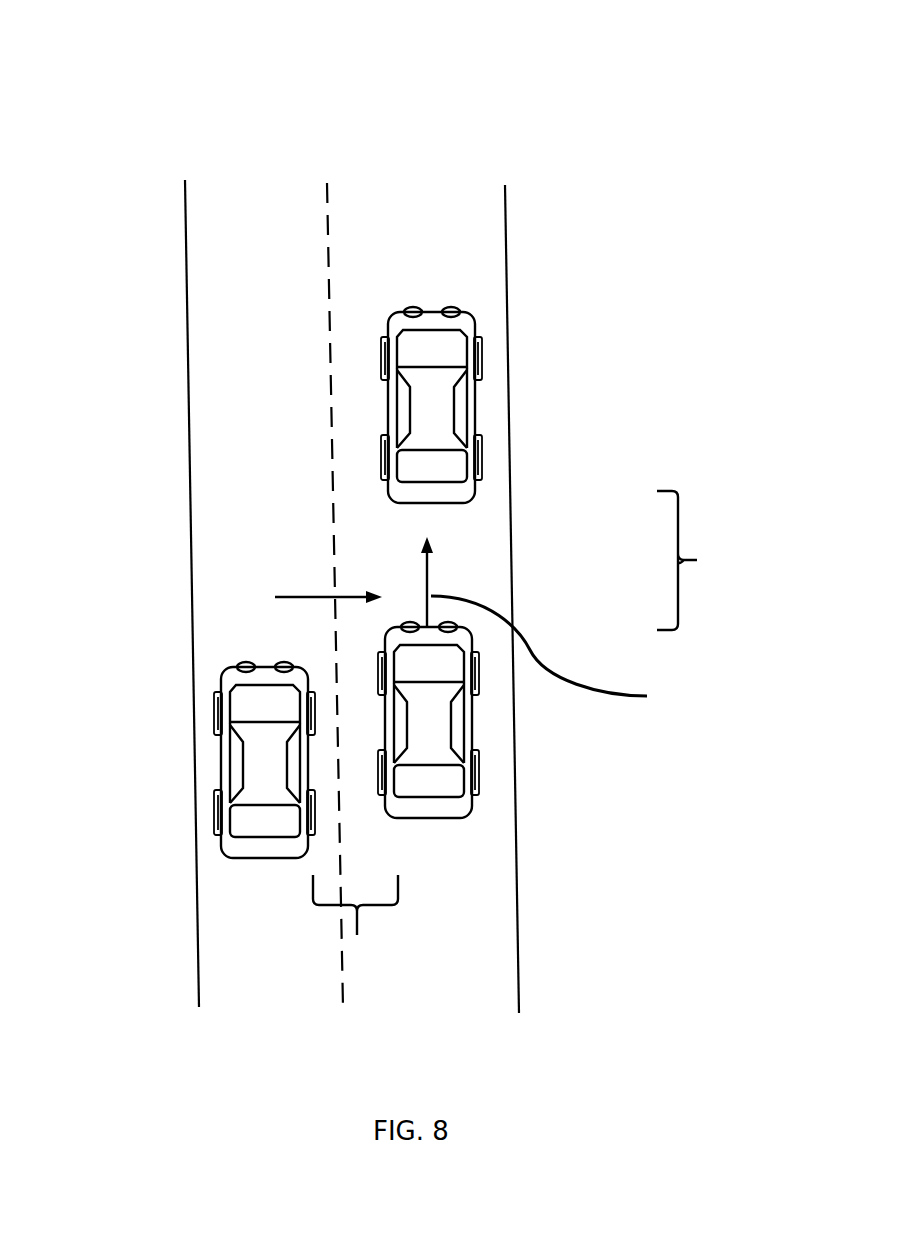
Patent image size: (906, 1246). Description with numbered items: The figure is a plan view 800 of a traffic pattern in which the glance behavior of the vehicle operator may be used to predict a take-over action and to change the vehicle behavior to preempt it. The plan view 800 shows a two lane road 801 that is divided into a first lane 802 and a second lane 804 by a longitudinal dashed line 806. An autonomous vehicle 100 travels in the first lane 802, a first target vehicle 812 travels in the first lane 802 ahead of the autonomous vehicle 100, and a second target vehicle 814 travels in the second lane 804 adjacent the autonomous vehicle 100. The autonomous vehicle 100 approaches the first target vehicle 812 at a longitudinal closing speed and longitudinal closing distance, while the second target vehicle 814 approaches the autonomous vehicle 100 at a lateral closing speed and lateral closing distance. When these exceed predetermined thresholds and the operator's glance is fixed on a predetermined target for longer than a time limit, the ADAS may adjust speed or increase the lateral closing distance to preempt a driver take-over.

The plan view 800 is at (590, 349).
The two lane road 801 is at (260, 162).
The first lane 802 is at (476, 212).
The second lane 804 is at (220, 217).
The longitudinal dashed line 806 is at (327, 187).
The first target vehicle 812 is at (436, 401).
The autonomous vehicle 100 is at (431, 716).
The second target vehicle 814 is at (247, 752).